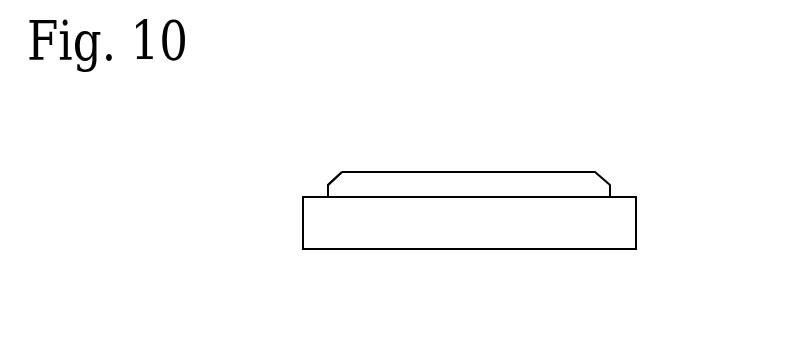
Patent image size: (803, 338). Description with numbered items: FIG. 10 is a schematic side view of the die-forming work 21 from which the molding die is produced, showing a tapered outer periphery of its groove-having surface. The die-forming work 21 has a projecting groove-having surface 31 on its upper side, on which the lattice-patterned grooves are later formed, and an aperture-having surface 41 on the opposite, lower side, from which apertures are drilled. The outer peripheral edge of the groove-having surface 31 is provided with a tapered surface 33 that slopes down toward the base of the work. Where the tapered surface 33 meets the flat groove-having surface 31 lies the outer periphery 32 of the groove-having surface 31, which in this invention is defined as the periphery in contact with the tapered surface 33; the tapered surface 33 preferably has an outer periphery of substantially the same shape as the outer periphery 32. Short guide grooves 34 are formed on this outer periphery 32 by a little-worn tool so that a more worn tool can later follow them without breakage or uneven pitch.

The die-forming work 21 is at (618, 221).
The groove-having surface 31 is at (558, 172).
The outer periphery of the groove-having surface 32 is at (342, 172).
The tapered surface 33 is at (334, 179).
The guide groove 34 is at (327, 185).
The aperture-having surface 41 is at (493, 249).